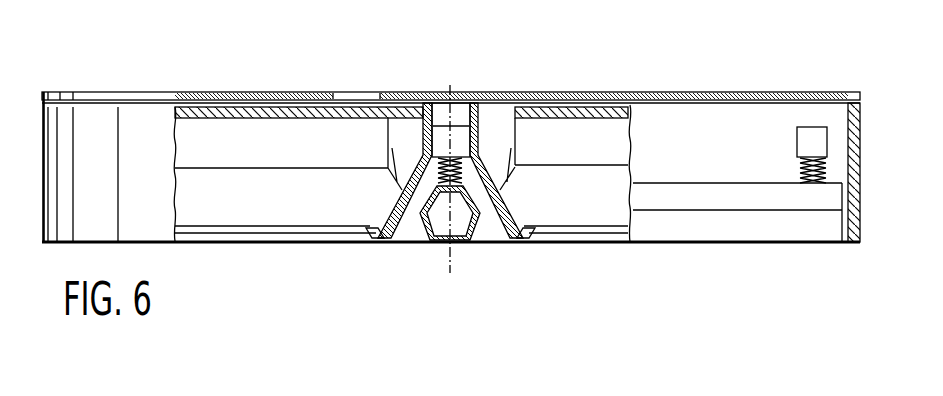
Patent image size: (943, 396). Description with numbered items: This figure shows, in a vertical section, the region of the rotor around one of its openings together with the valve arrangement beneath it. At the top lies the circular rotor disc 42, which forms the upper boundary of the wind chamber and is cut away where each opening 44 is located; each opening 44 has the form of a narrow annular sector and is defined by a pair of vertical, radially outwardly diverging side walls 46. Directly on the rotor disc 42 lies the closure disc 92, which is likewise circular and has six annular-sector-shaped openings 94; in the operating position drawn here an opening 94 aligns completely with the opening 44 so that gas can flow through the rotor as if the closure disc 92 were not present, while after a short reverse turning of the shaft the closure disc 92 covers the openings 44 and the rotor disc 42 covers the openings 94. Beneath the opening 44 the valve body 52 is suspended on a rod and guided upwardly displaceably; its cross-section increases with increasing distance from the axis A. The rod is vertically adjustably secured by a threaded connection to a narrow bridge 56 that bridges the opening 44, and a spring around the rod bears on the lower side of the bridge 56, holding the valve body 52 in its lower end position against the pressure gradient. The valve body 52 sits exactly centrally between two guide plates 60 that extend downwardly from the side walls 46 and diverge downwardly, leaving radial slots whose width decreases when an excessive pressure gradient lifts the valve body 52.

The rotor disc 42 is at (587, 103).
The opening 44 is at (447, 107).
The side wall 46 is at (481, 115).
The valve body 52 is at (432, 233).
The bridge 56 is at (437, 140).
The guide plate 60 is at (397, 207).
The closure disc 92 is at (678, 92).
The opening of the closure disc 94 is at (357, 92).
The axis A is at (452, 257).